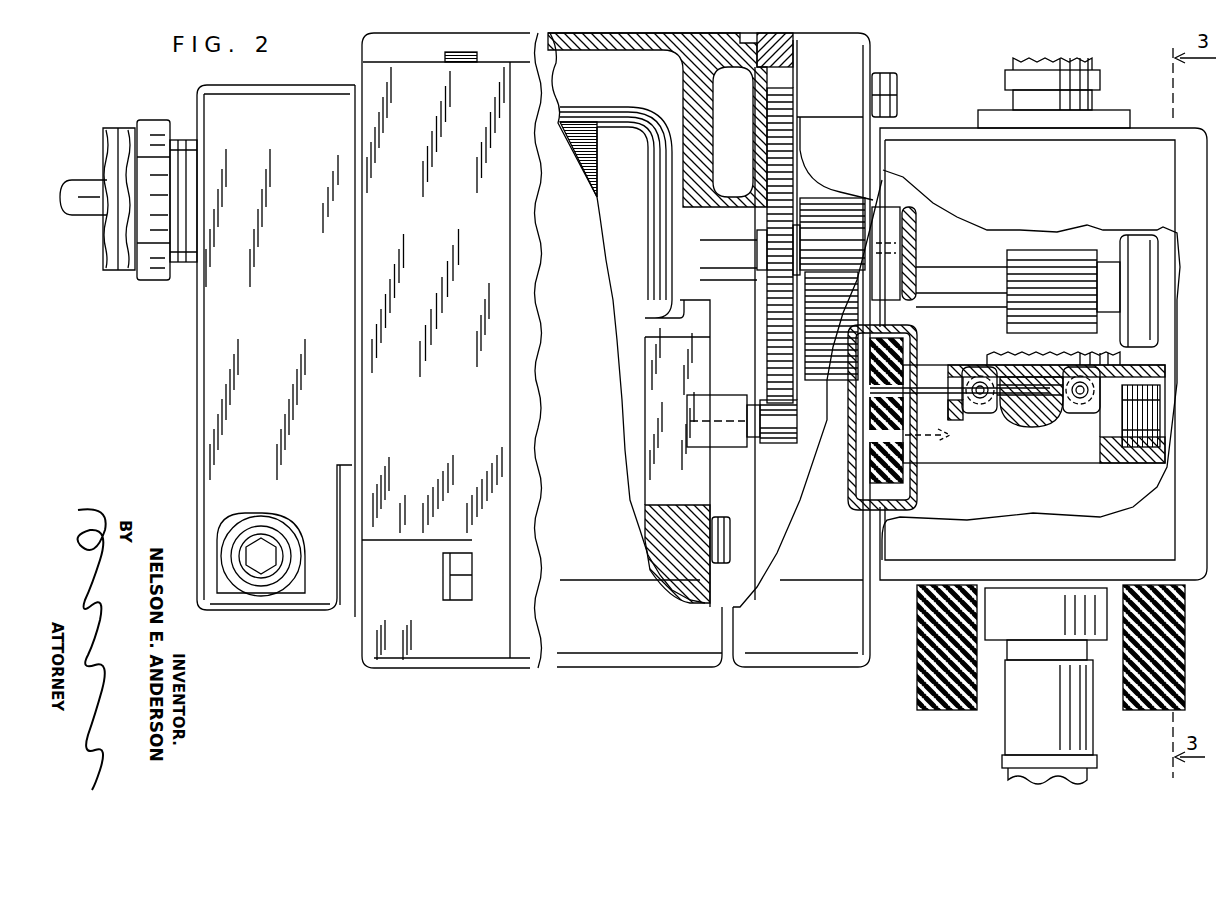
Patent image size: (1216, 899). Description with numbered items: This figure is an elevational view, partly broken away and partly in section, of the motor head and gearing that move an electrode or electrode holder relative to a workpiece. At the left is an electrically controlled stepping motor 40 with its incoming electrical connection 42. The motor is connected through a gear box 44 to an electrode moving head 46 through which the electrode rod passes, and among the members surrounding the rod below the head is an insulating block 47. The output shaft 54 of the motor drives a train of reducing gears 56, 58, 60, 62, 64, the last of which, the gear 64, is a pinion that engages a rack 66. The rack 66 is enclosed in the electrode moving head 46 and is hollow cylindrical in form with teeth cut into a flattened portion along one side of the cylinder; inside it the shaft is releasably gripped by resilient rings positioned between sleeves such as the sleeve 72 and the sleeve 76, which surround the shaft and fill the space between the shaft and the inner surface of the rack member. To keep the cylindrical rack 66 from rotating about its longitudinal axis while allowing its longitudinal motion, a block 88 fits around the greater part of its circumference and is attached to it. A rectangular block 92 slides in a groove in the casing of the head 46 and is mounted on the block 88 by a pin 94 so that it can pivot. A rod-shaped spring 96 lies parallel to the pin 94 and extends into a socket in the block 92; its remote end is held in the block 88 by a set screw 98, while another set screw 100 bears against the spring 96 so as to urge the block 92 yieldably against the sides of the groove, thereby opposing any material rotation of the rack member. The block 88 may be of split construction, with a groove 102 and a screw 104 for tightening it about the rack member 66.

The stepping motor 40 is at (488, 46).
The electrical connection 42 is at (88, 222).
The gear box 44 is at (843, 46).
The electrode moving head 46 is at (938, 145).
The insulating block 47 is at (916, 693).
The output shaft 54 is at (752, 447).
The reducing gear 56 is at (785, 440).
The reducing gear 58 is at (788, 372).
The reducing gear 60 is at (828, 233).
The reducing gear 62 is at (815, 297).
The pinion 64 is at (1020, 258).
The rack 66 is at (1010, 612).
The sleeve 72 is at (1020, 103).
The sleeve 76 is at (1023, 730).
The block 88 is at (1005, 455).
The rectangular block 92 is at (905, 352).
The pin 94 is at (939, 444).
The rod-shaped spring 96 is at (932, 385).
The set screw 98 is at (1082, 400).
The set screw 100 is at (975, 398).
The groove 102 is at (1048, 415).
The screw 104 is at (1148, 447).